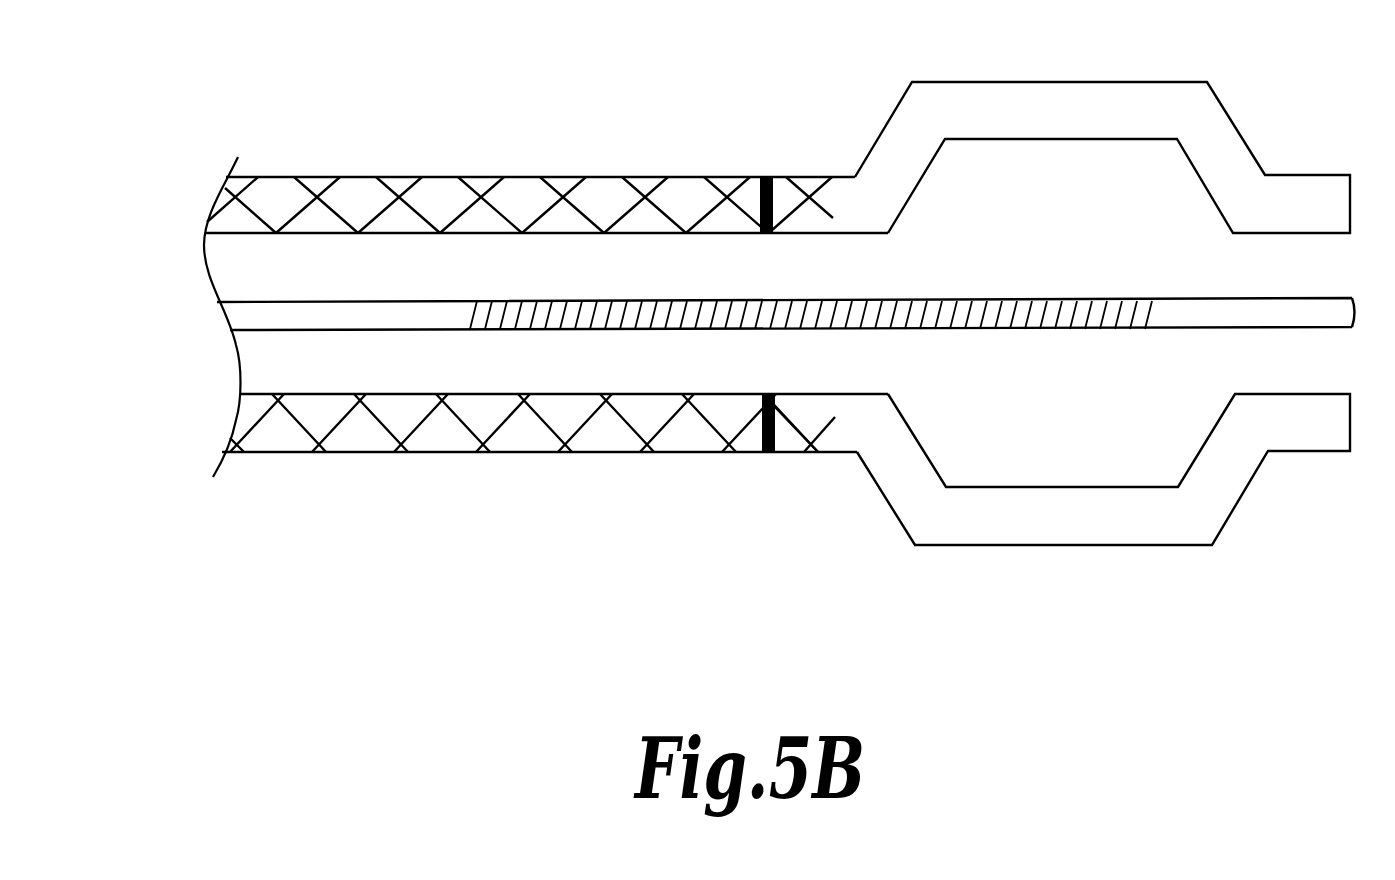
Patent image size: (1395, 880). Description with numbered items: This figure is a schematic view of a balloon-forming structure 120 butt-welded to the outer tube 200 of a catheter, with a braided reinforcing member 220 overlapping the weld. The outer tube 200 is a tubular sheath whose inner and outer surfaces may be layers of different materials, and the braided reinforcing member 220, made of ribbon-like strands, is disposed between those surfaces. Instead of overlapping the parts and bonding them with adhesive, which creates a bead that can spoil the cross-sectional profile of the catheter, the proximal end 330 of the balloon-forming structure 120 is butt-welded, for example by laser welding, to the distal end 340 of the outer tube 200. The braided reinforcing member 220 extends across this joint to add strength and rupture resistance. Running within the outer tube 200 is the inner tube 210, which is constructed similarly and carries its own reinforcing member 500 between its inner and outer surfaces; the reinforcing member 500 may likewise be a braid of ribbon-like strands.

The balloon-forming structure 120 is at (1035, 518).
The outer tube 200 is at (330, 177).
The inner tube 210 is at (478, 303).
The braided reinforcing member 220 is at (340, 437).
The proximal end of balloon-forming structure 330 is at (778, 177).
The distal end of tube 340 is at (752, 177).
The reinforcing member 500 is at (567, 327).